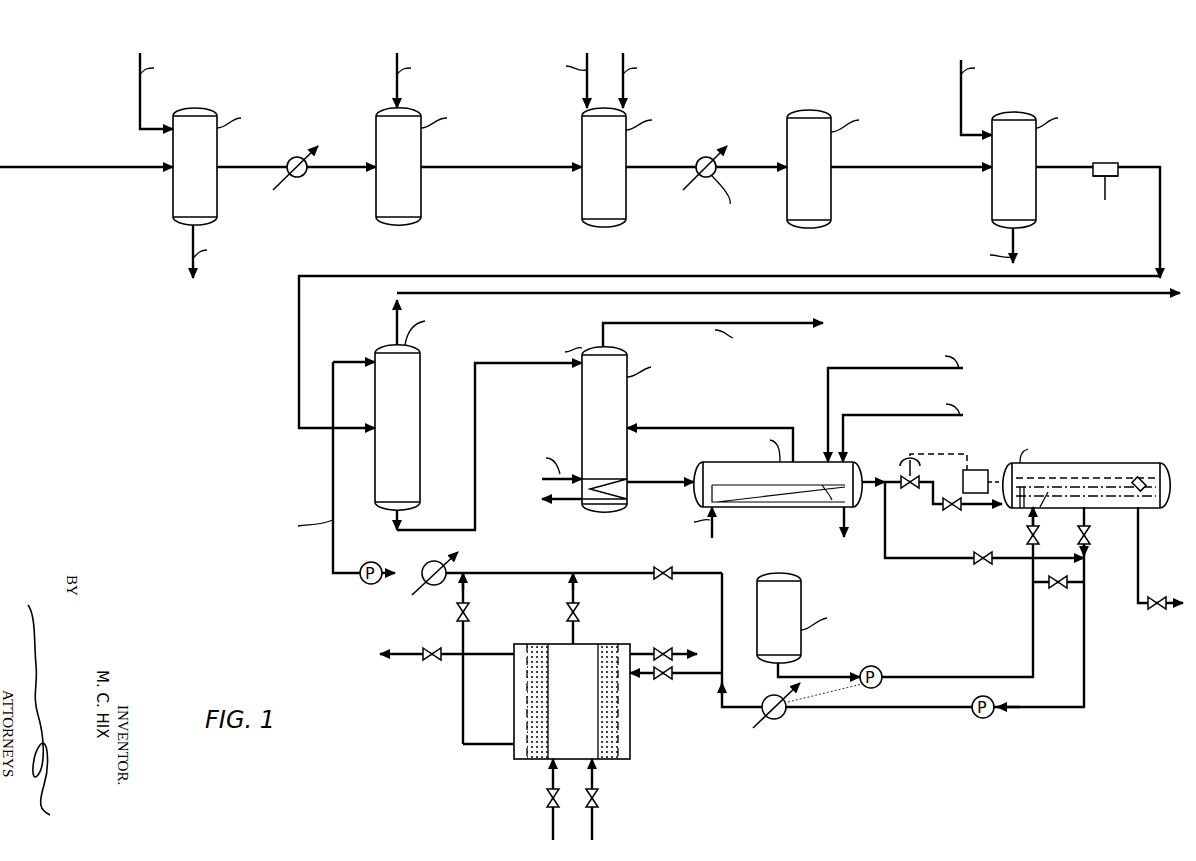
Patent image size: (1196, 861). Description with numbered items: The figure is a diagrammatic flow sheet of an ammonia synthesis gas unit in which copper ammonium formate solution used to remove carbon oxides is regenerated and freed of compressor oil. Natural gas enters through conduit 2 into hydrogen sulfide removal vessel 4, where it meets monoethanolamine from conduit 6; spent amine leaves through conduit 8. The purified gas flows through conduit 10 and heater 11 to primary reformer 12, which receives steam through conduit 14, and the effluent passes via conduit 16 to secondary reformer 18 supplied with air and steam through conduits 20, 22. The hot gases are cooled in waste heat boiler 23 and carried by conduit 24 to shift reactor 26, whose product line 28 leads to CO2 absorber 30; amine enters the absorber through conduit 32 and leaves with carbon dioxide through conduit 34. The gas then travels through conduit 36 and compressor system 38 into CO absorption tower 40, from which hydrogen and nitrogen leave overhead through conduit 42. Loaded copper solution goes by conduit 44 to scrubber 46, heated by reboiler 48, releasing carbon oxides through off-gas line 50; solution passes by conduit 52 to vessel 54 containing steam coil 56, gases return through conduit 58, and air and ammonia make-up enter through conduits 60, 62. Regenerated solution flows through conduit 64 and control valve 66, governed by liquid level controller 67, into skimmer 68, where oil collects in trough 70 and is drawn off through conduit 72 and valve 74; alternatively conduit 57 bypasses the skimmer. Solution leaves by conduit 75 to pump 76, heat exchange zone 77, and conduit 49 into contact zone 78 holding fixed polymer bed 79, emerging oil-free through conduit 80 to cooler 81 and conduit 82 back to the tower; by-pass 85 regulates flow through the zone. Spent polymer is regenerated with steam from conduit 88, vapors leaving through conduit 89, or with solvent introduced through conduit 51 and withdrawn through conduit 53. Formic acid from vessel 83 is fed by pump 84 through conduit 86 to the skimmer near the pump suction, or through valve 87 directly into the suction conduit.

The conduit 2 is at (66, 168).
The hydrogen sulfide removal vessel 4 is at (185, 108).
The conduit 6 is at (140, 88).
The conduit 8 is at (192, 254).
The conduit 10 is at (258, 171).
The heater 11 is at (292, 157).
The primary reformer 12 is at (418, 112).
The conduit 14 is at (397, 86).
The conduit 16 is at (492, 171).
The secondary reformer 18 is at (578, 180).
The conduit 20 is at (586, 88).
The conduit 22 is at (623, 92).
The waste heat boiler 23 is at (696, 160).
The conduit 24 is at (730, 166).
The shift reactor 26 is at (808, 112).
The shift reactor effluent line 28 is at (918, 172).
The CO2 absorber 30 is at (1036, 150).
The conduit 32 is at (961, 89).
The conduit 34 is at (1013, 256).
The conduit 36 is at (1078, 173).
The compressor system 38 is at (1108, 163).
The CO absorption tower 40 is at (375, 463).
The conduit 42 is at (397, 328).
The conduit 44 is at (475, 510).
The scrubber 46 is at (582, 388).
The reboiler 48 is at (577, 508).
The conduit 49 is at (573, 631).
The CO+CO2 off-gas line 50 is at (729, 322).
The conduit 51 is at (592, 780).
The conduit 52 is at (637, 484).
The conduit 53 is at (682, 644).
The vessel 54 is at (784, 510).
The steam coil 56 is at (829, 510).
The conduit 57 is at (940, 560).
The conduit 58 is at (706, 428).
The conduit 60 is at (965, 368).
The conduit 62 is at (950, 416).
The conduit 64 is at (893, 480).
The control valve 66 is at (906, 459).
The liquid level controller 67 is at (962, 478).
The skimmer 68 is at (1016, 459).
The trough 70 is at (1143, 478).
The conduit 72 is at (1138, 603).
The valve 74 is at (1157, 612).
The conduit 75 is at (1084, 676).
The pump 76 is at (971, 698).
The heat exchange zone 77 is at (786, 714).
The contact zone 78 is at (630, 752).
The fixed bed 79 is at (608, 729).
The conduit 80 is at (463, 720).
The cooler 81 is at (424, 558).
The conduit 82 is at (333, 573).
The vessel 83 is at (803, 590).
The pump 84 is at (876, 666).
The by-pass 85 is at (712, 566).
The conduit 86 is at (992, 677).
The valve 87 is at (1070, 584).
The conduit 88 is at (553, 816).
The conduit 89 is at (414, 652).